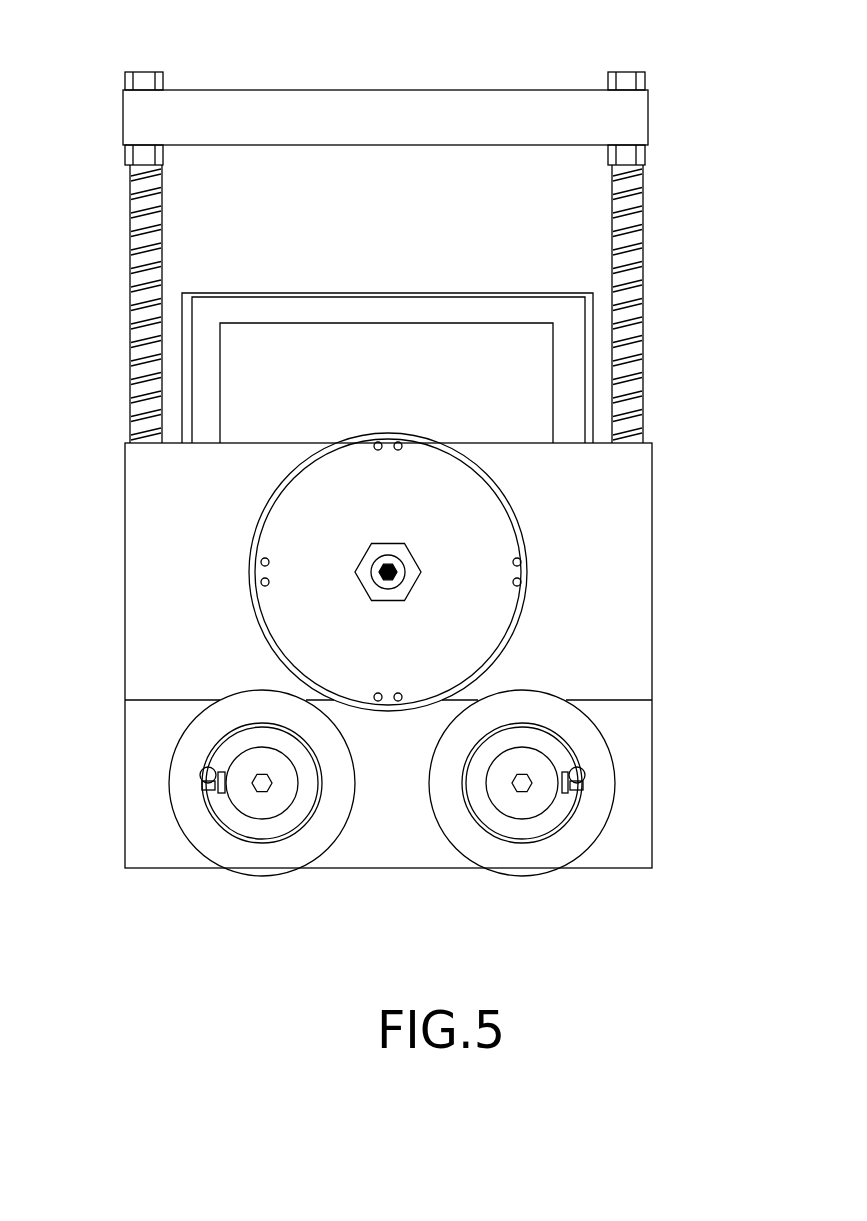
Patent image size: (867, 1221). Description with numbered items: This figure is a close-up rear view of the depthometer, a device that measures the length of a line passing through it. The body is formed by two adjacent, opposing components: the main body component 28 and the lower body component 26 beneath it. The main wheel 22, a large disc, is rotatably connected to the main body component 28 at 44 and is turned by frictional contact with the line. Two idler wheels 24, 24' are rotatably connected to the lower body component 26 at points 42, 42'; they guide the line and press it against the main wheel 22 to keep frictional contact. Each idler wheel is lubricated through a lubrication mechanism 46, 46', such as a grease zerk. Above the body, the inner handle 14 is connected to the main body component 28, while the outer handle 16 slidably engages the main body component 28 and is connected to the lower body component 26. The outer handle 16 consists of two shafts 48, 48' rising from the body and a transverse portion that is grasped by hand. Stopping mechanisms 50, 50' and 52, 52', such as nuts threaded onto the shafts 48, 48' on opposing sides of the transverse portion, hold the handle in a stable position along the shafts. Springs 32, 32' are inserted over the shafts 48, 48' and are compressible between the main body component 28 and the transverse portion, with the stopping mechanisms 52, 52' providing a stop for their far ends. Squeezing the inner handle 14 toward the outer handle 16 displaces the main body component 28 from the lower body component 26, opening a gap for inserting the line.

The inner handle 14 is at (210, 307).
The outer handle 16 is at (358, 96).
The main wheel 22 is at (527, 532).
The idler wheel 24 is at (522, 753).
The idler wheel 24' is at (262, 746).
The lower body component 26 is at (653, 715).
The main body component 28 is at (653, 577).
The spring 32 is at (666, 304).
The spring 32' is at (107, 304).
The connection point 42 is at (563, 848).
The connection point 42' is at (331, 768).
The connection point 44 is at (400, 568).
The lubrication mechanism 46 is at (634, 812).
The lubrication mechanism 46' is at (151, 758).
The shaft 48 is at (666, 304).
The shaft 48' is at (107, 304).
The stopping mechanism 50 is at (671, 67).
The stopping mechanism 50' is at (103, 84).
The stopping mechanism 52 is at (670, 154).
The stopping mechanism 52' is at (103, 154).